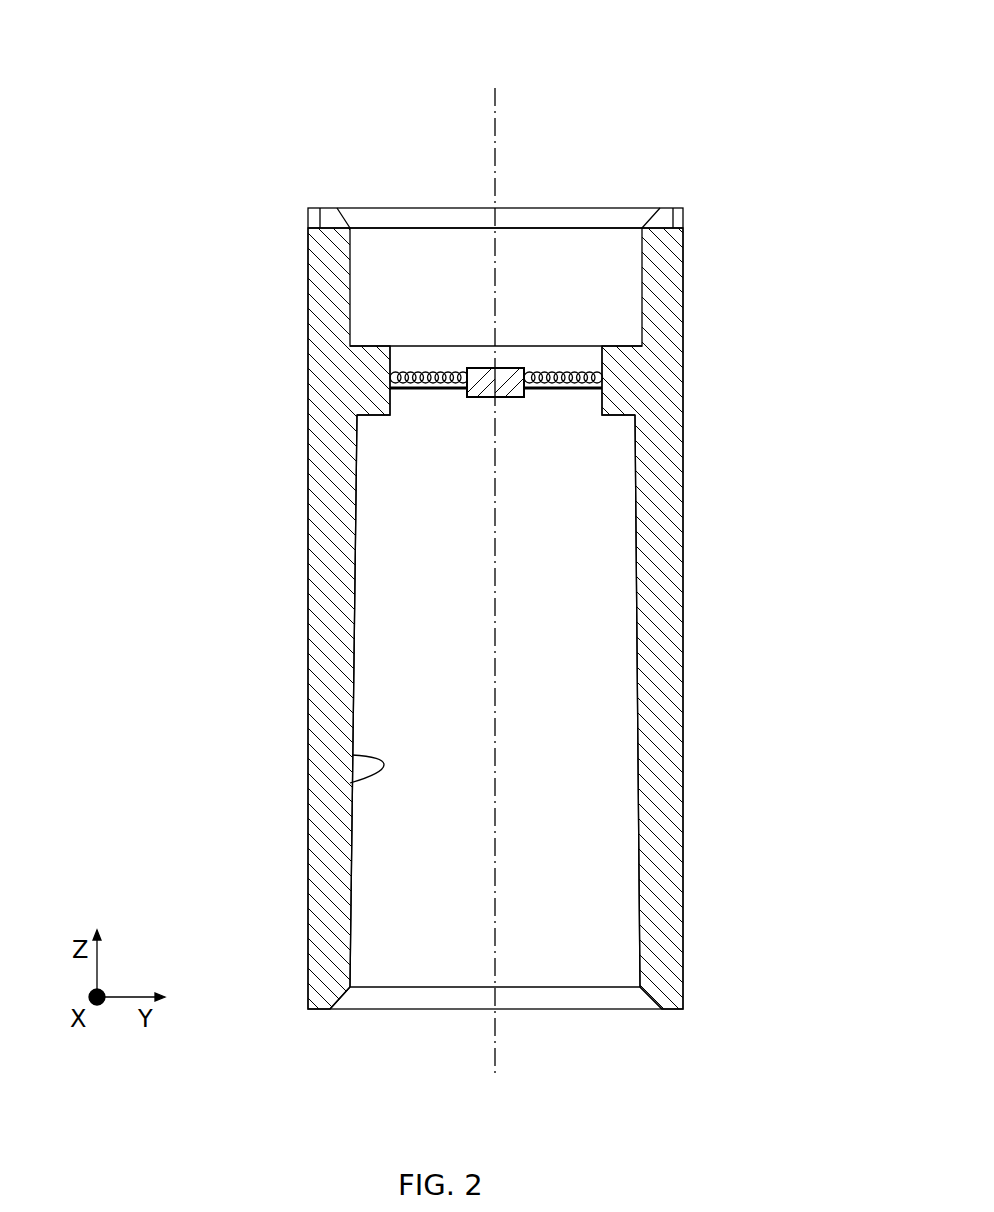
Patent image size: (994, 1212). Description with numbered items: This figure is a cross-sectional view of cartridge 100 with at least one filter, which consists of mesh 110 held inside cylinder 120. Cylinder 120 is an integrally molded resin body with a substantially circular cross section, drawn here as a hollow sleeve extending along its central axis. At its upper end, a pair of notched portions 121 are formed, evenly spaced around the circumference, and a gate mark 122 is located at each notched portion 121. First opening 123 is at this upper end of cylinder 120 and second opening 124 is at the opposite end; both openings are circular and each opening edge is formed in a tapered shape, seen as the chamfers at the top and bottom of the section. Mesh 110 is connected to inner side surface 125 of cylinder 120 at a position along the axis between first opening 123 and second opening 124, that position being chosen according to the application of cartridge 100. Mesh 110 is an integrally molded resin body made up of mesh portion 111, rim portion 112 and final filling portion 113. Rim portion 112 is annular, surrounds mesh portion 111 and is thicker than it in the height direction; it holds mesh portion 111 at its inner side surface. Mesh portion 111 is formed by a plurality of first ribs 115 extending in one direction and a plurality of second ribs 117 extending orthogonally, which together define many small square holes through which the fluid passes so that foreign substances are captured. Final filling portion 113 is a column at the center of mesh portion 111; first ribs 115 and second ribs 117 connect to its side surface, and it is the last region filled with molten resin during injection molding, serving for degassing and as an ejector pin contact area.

The cartridge with at least one filter 100 is at (727, 78).
The mesh 110 is at (375, 508).
The mesh portion 111 is at (621, 466).
The rim portion 112 is at (375, 403).
The final filling portion 113 is at (485, 397).
The first rib 115 is at (585, 383).
The second rib 117 is at (532, 392).
The cylinder 120 is at (683, 302).
The notched portion 121 is at (338, 214).
The gate mark 122 is at (320, 216).
The first opening 123 is at (517, 207).
The second opening 124 is at (558, 1009).
The inner side surface 125 is at (350, 783).